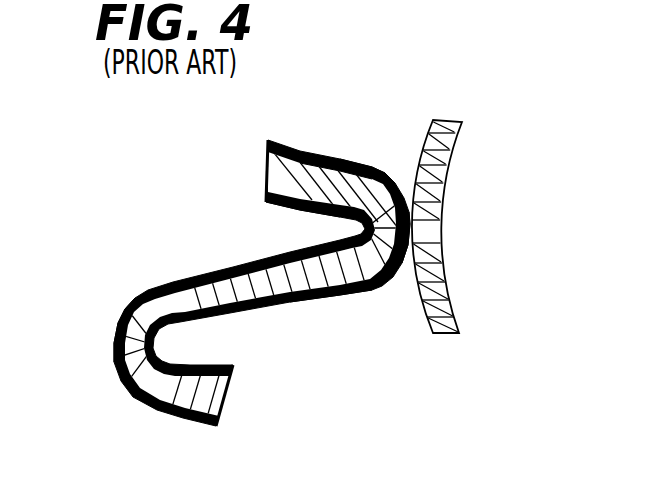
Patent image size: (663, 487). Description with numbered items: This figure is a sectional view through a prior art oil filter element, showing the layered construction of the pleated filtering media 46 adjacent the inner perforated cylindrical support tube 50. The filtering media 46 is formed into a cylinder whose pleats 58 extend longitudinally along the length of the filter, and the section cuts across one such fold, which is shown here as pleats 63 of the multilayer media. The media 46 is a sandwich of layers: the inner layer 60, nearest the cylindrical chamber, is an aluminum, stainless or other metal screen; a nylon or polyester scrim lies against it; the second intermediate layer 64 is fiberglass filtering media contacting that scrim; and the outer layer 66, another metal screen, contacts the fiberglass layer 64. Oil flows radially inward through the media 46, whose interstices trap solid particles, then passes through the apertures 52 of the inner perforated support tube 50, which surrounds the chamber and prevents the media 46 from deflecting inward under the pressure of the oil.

The pleated filtering media 46 is at (328, 334).
The inner perforated cylindrical support tube 50 is at (476, 213).
The apertures 52 is at (431, 232).
The pleats 58 is at (115, 371).
The inner layer 60 is at (378, 293).
The pleats 63 is at (376, 166).
The second intermediate layer 64 is at (352, 163).
The outer layer 66 is at (303, 205).